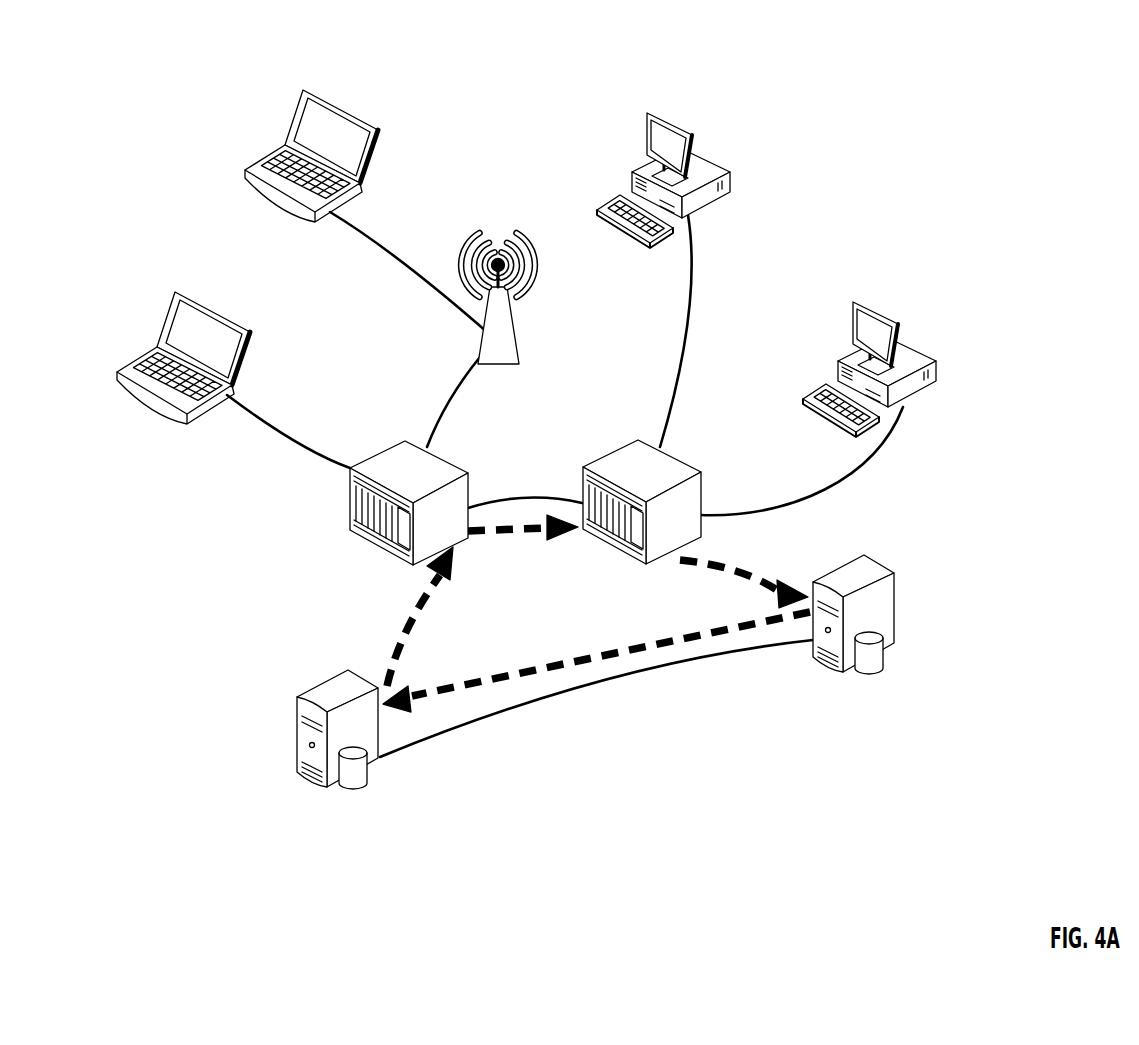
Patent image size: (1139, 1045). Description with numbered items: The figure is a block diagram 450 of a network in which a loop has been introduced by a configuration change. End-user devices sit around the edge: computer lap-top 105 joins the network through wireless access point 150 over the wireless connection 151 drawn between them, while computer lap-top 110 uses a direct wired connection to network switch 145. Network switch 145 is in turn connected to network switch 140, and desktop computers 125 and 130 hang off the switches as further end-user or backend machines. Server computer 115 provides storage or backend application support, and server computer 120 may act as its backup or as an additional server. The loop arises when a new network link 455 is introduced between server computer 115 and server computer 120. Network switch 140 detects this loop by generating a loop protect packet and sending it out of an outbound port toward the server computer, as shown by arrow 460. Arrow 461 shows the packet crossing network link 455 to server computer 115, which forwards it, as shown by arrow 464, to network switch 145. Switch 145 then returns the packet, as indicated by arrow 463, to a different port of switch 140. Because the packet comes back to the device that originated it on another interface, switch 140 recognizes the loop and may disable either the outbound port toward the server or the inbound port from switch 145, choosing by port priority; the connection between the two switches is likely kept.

The computer lap-top 105 is at (283, 143).
The computer lap-top 110 is at (162, 318).
The server computer 115 is at (297, 700).
The server computer 120 is at (895, 622).
The desktop computer 125 is at (845, 352).
The desktop computer 130 is at (638, 162).
The network switch 140 is at (603, 445).
The network switch 145 is at (350, 512).
The wireless access point 150 is at (515, 317).
The wireless connection 151 is at (390, 246).
The block diagram 450 is at (1073, 88).
The network link 455 is at (548, 697).
The arrow 460 is at (683, 557).
The arrow 461 is at (600, 658).
The arrow 463 is at (523, 530).
The arrow 464 is at (415, 623).